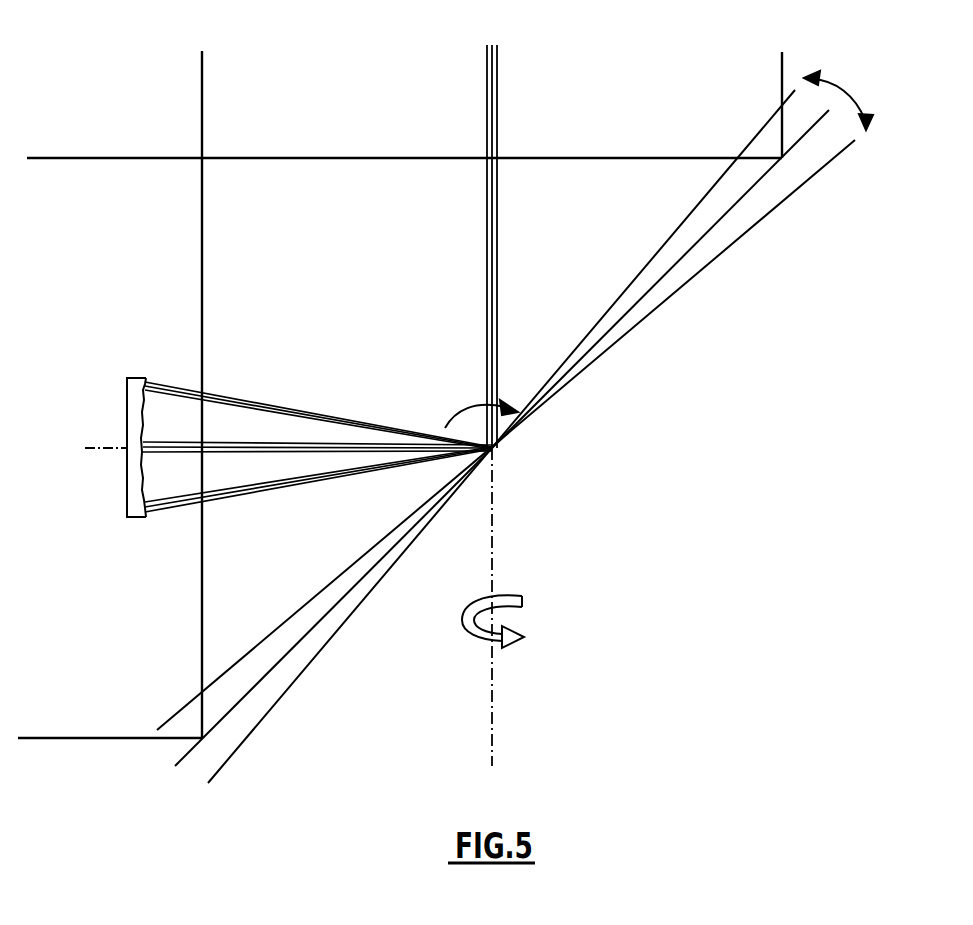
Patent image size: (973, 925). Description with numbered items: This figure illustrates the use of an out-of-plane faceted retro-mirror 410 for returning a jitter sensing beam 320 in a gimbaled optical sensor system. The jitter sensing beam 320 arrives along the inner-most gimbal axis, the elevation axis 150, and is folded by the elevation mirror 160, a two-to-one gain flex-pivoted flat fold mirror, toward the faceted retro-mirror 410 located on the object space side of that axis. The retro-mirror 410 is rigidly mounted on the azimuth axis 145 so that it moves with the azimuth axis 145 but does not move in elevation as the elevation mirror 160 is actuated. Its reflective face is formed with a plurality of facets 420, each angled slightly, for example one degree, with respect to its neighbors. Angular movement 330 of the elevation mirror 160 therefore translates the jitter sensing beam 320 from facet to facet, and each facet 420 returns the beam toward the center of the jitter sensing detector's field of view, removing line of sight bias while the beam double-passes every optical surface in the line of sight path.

The azimuth axis 145 is at (508, 620).
The elevation axis 150 is at (478, 404).
The elevation mirror 160 is at (692, 280).
The jitter sensing beam 320 is at (497, 72).
The angular movement of the elevation mirror 330 is at (858, 92).
The faceted retro-mirror 410 is at (127, 420).
The facets 420 is at (146, 467).